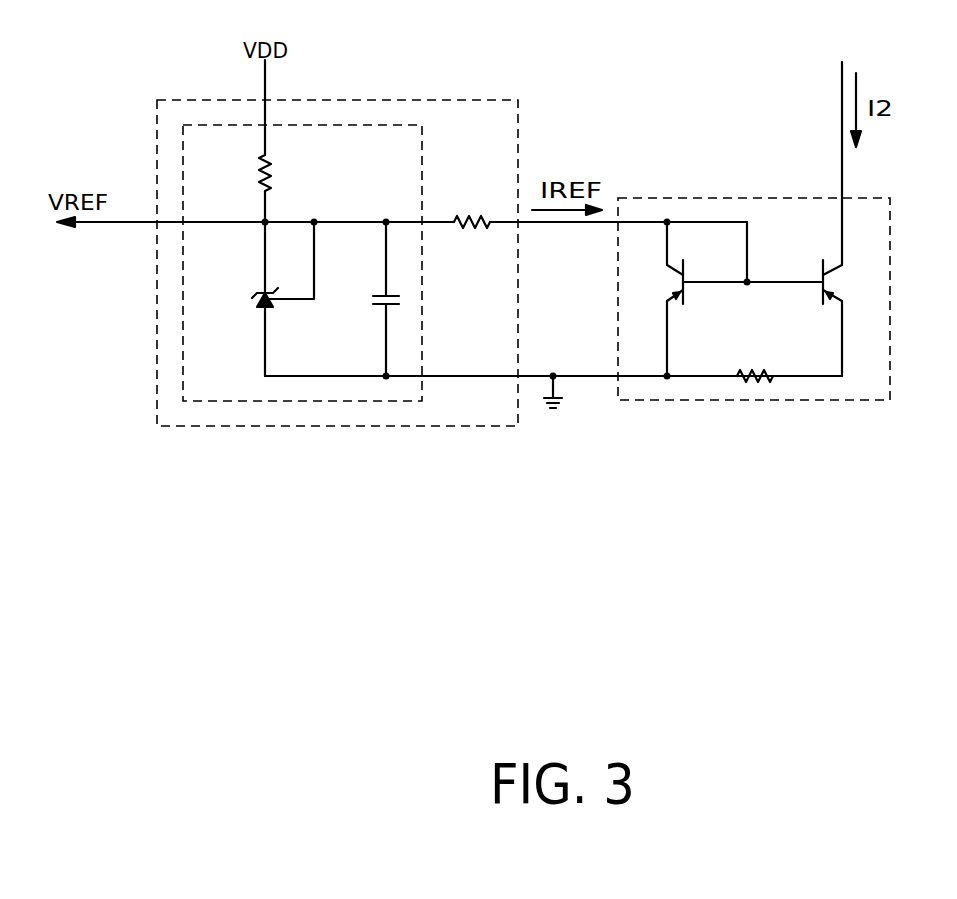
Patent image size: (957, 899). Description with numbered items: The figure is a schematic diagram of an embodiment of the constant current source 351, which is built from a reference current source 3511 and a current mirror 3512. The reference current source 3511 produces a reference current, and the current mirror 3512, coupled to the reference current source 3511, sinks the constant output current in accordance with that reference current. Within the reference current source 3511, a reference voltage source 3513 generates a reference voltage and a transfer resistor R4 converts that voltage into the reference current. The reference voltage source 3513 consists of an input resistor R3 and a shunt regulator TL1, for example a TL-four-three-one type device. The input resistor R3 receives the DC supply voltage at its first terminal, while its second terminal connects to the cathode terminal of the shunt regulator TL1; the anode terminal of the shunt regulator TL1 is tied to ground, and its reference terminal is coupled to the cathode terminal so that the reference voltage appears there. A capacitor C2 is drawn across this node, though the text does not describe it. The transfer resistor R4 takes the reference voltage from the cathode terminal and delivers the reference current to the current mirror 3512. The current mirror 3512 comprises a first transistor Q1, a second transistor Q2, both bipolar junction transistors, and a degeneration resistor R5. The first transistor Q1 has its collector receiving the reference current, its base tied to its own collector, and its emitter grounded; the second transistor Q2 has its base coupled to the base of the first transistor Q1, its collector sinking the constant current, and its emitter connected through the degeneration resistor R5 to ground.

The constant current source 351 is at (956, 506).
The reference current source 3511 is at (338, 427).
The current mirror 3512 is at (757, 400).
The reference voltage source 3513 is at (422, 327).
The input resistor R3 is at (248, 173).
The transfer resistor R4 is at (471, 207).
The degeneration resistor R5 is at (757, 361).
The capacitor C2 is at (369, 299).
The shunt regulator TL1 is at (257, 299).
The first transistor Q1 is at (657, 299).
The second transistor Q2 is at (855, 219).